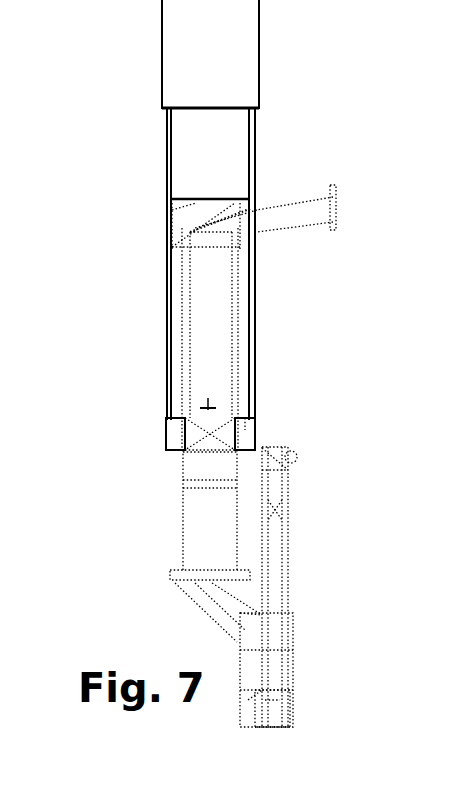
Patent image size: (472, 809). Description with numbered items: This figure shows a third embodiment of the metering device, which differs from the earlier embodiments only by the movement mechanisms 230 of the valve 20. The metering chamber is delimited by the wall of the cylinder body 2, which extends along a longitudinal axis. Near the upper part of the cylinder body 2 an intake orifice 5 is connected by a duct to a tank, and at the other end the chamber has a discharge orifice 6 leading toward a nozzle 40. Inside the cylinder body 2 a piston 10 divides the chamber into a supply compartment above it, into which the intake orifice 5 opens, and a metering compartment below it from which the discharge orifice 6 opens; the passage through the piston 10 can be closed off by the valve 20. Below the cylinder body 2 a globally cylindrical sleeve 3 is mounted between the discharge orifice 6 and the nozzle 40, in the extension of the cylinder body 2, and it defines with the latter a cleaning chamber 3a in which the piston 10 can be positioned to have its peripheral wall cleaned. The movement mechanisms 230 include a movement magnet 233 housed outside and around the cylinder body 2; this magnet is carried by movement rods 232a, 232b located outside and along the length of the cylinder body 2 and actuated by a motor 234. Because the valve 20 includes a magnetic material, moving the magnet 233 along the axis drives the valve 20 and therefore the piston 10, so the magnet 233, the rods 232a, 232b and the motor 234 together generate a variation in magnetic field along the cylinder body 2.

The movement mechanisms 230 is at (152, 61).
The motor 234 is at (225, 78).
The movement rod 232a is at (168, 159).
The movement rod 232b is at (257, 166).
The intake orifice 5 is at (257, 219).
The cylinder body 2 is at (237, 298).
The valve 20 is at (207, 404).
The piston 10 is at (247, 418).
The movement magnet 233 is at (257, 444).
The discharge orifice 6 is at (207, 489).
The sleeve 3 is at (183, 552).
The cleaning chamber 3a is at (222, 535).
The nozzle 40 is at (306, 661).